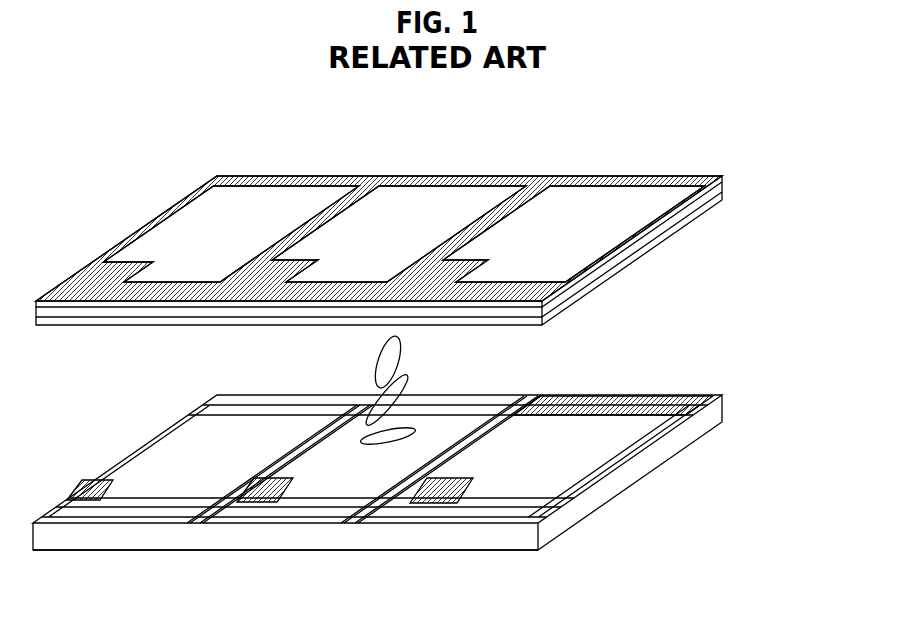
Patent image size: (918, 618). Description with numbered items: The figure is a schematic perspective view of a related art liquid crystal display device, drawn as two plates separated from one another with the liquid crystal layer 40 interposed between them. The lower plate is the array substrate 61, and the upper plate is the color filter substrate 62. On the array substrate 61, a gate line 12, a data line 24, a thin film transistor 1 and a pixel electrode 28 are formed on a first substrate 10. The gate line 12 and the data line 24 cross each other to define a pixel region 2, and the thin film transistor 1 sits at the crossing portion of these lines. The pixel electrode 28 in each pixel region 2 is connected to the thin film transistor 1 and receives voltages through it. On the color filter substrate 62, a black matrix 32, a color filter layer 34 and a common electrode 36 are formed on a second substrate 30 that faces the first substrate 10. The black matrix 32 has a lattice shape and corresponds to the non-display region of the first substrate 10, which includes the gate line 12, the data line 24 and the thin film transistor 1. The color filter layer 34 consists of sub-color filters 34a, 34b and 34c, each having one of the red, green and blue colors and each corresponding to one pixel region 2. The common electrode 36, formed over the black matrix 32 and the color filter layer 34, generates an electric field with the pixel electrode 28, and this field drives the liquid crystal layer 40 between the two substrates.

The thin film transistor 1 is at (437, 530).
The pixel region 2 is at (675, 458).
The first substrate 10 is at (724, 394).
The gate line 12 is at (393, 527).
The data line 24 is at (530, 400).
The pixel electrode 28 is at (600, 489).
The second substrate 30 is at (724, 177).
The black matrix 32 is at (724, 189).
The color filter layer 34 is at (648, 128).
The sub-color filter 34a is at (305, 177).
The sub-color filter 34b is at (467, 177).
The sub-color filter 34c is at (635, 177).
The common electrode 36 is at (724, 199).
The liquid crystal layer 40 is at (437, 374).
The array substrate 61 is at (428, 461).
The color filter substrate 62 is at (430, 205).